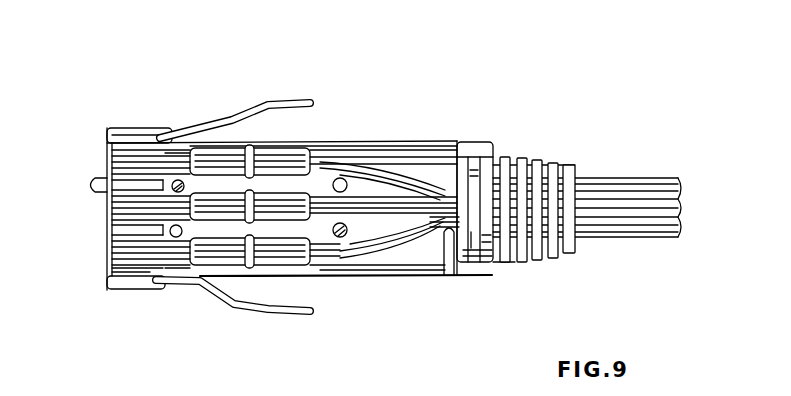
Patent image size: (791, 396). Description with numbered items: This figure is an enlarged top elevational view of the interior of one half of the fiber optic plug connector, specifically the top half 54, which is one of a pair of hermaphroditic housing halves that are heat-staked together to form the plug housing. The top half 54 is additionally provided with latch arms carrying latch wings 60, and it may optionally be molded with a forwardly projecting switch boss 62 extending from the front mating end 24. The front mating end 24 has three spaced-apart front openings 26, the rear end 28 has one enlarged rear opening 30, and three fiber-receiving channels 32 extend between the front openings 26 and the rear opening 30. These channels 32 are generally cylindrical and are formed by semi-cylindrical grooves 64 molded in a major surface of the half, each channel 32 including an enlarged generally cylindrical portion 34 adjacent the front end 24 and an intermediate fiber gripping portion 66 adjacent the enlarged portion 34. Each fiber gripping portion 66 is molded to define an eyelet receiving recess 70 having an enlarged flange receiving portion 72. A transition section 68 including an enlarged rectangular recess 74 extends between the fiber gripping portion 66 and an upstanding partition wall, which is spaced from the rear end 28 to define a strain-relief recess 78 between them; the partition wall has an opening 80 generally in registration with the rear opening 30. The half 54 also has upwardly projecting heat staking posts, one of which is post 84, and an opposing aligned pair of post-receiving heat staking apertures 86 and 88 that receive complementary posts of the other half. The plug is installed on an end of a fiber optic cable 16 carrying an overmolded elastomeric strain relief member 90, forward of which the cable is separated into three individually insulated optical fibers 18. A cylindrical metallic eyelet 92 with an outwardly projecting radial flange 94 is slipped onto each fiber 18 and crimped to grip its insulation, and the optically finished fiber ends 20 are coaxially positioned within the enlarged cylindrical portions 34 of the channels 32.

The fiber optic cable 16 is at (630, 178).
The insulated optical fibers 18 is at (437, 220).
The fiber ends 20 is at (112, 160).
The front mating end 24 is at (100, 268).
The front openings 26 is at (107, 222).
The rear end 28 is at (494, 150).
The rear opening 30 is at (504, 160).
The fiber-receiving channels 32 is at (165, 152).
The enlarged generally cylindrical portion 34 is at (128, 152).
The top half 54 is at (517, 94).
The latch wings 60 is at (233, 105).
The switch boss 62 is at (92, 186).
The semi-cylindrical grooves 64 is at (181, 266).
The intermediate fiber gripping portion 66 is at (257, 276).
The transition section 68 is at (380, 274).
The eyelet receiving recess 70 is at (218, 267).
The flange receiving portion 72 is at (249, 268).
The enlarged rectangular recess 74 is at (423, 256).
The strain-relief recess 78 is at (472, 238).
The opening 80 is at (450, 235).
The heat staking post 84 is at (370, 152).
The heat staking aperture 86 is at (175, 238).
The heat staking aperture 88 is at (342, 238).
The strain relief member 90 is at (484, 238).
The eyelet 92 is at (308, 157).
The radial flange 94 is at (248, 147).